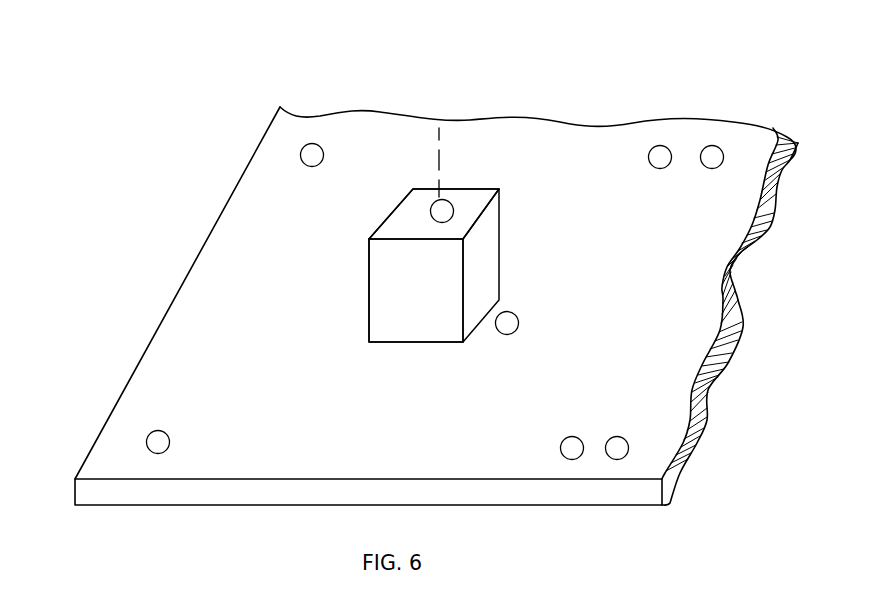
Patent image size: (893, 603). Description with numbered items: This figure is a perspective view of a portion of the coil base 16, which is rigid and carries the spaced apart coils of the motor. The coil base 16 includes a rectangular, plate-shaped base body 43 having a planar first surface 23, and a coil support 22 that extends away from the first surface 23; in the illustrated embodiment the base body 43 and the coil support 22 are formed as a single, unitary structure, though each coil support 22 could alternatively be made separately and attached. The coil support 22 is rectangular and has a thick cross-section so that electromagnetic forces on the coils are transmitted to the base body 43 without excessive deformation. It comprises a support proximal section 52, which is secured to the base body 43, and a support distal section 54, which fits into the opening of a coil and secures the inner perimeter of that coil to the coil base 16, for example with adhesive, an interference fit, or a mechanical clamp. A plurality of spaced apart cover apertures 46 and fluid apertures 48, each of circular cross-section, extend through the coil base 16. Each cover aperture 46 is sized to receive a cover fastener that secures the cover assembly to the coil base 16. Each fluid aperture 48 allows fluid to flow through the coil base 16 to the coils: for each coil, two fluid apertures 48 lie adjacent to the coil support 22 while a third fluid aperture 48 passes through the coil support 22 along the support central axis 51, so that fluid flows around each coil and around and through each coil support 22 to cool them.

The coil base 16 is at (192, 245).
The coil support 22 is at (487, 238).
The first surface 23 is at (188, 377).
The base body 43 is at (112, 404).
The cover aperture 46 is at (158, 442).
The fluid aperture 48 is at (312, 154).
The support central axis 51 is at (440, 138).
The support proximal section 52 is at (382, 315).
The support distal section 54 is at (393, 273).